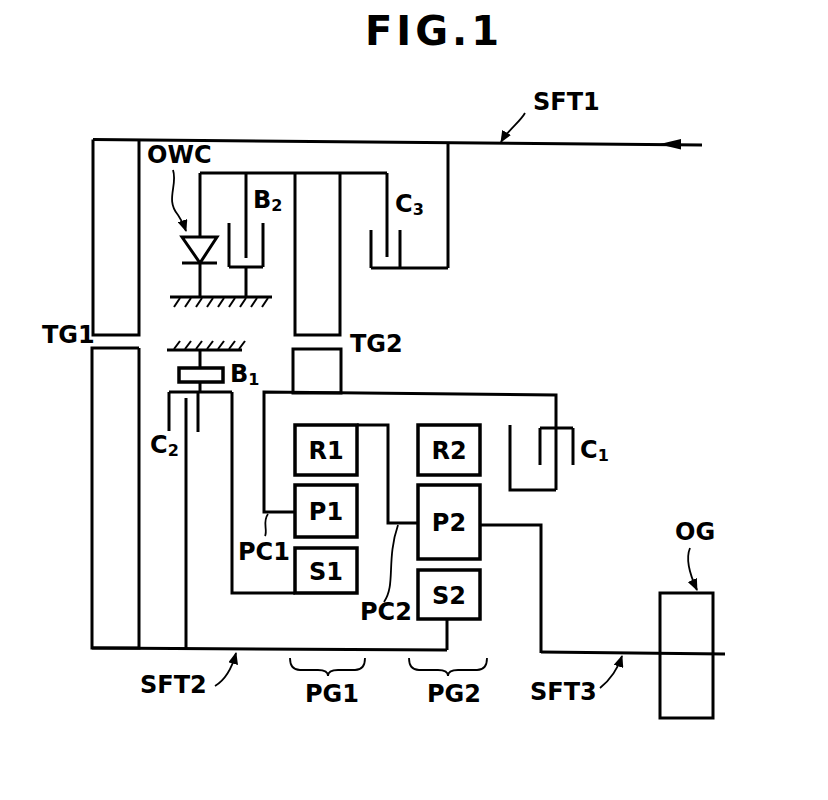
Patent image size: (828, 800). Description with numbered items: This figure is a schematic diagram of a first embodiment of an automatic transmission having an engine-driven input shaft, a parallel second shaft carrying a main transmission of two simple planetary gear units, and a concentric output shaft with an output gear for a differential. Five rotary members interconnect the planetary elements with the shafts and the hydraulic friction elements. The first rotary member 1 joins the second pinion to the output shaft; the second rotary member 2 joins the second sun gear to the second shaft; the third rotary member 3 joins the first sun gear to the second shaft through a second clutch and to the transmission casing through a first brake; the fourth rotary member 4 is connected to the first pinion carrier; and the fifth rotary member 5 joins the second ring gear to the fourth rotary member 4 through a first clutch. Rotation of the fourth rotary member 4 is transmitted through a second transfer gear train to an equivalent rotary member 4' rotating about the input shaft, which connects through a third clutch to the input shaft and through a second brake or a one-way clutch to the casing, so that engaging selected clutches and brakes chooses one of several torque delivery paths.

The first rotary member 1 is at (546, 557).
The second rotary member 2 is at (451, 638).
The third rotary member 3 is at (265, 597).
The fourth rotary member 4 is at (410, 426).
The equivalent rotary member 4' is at (293, 168).
The fifth rotary member 5 is at (559, 483).